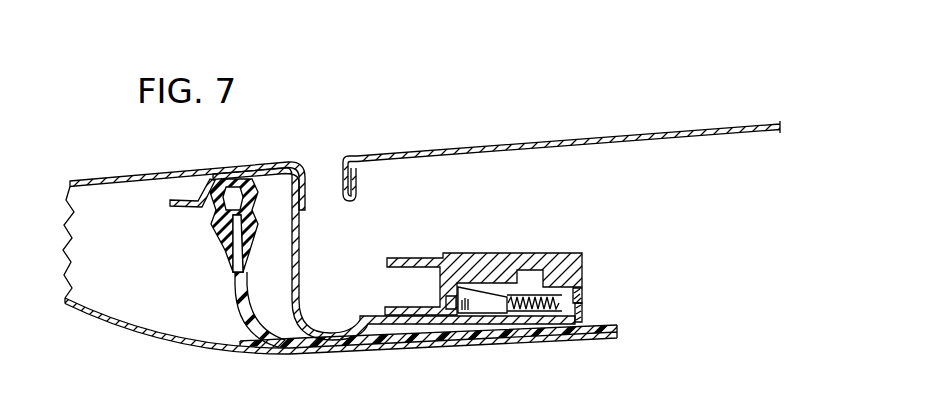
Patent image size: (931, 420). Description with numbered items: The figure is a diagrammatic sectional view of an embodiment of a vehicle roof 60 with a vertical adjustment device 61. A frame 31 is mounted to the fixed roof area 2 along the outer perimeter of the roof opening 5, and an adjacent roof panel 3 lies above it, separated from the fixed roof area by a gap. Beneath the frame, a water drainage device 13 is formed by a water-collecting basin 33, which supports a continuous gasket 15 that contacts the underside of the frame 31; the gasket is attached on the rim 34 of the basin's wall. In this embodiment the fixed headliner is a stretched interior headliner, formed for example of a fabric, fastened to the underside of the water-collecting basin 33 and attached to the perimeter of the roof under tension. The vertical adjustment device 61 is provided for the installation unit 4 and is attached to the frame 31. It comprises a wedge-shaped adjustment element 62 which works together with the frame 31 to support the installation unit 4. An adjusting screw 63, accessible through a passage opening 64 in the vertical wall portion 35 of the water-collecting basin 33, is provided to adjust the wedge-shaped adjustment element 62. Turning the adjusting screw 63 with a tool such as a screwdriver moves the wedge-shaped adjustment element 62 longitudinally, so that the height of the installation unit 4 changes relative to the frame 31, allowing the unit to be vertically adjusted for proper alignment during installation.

The fixed roof area 2 is at (114, 180).
The top panel 3 is at (685, 127).
The installation unit 4 is at (541, 240).
The roof opening 5 is at (325, 172).
The water drainage device 13 is at (276, 262).
The continuous gasket 15 is at (227, 183).
The frame 31 is at (296, 312).
The water-collecting basin 33 is at (333, 345).
The rim 34 is at (236, 288).
The vertical wall portion 35 is at (583, 318).
The vehicle roof 60 is at (469, 112).
The vertical adjustment device 61 is at (501, 347).
The wedge-shaped adjustment element 62 is at (480, 305).
The adjusting screw 63 is at (537, 312).
The passage opening 64 is at (583, 300).